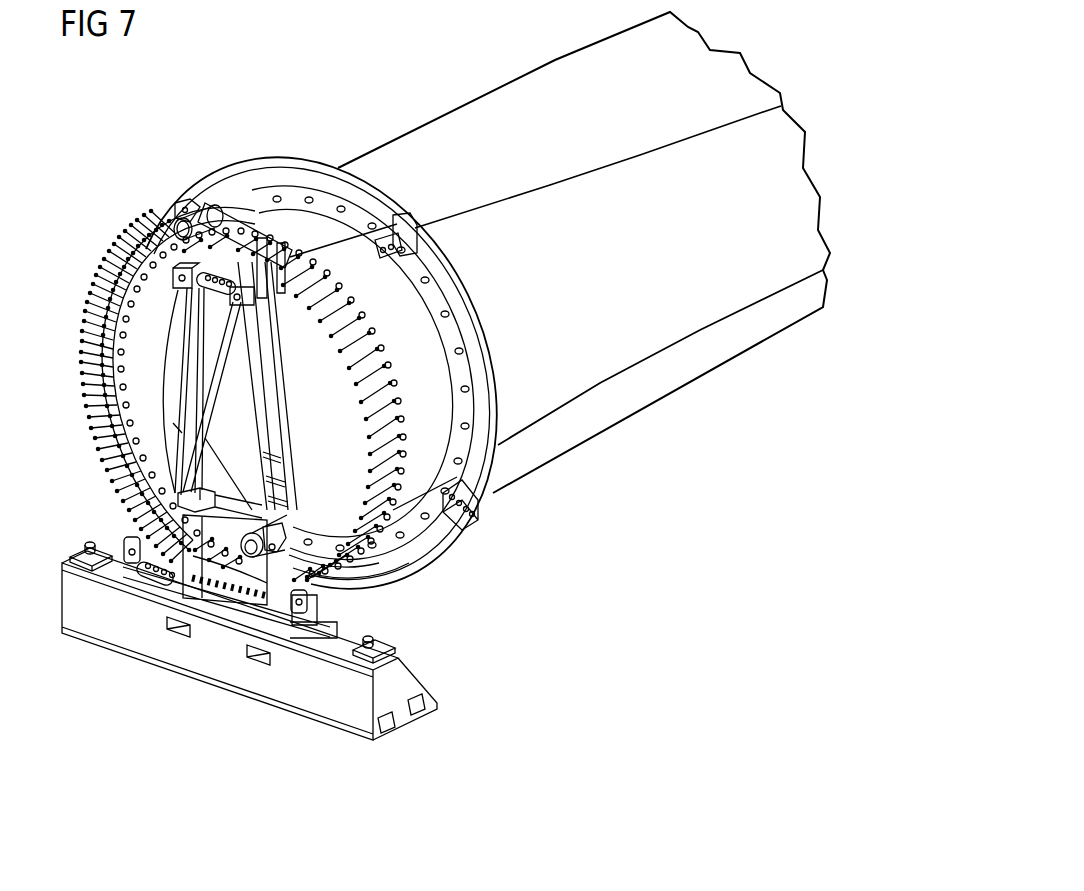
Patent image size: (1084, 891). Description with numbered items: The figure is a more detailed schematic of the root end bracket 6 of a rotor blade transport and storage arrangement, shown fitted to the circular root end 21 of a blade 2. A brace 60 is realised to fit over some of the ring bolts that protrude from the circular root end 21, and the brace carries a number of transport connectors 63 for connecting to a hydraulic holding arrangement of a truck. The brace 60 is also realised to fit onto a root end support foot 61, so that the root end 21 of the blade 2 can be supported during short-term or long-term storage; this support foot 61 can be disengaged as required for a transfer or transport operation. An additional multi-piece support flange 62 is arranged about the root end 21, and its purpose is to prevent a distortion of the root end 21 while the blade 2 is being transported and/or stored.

The blade 2 is at (620, 406).
The root end bracket 6 is at (234, 427).
The root end 21 is at (395, 537).
The brace 60 is at (140, 518).
The root end support foot 61 is at (113, 640).
The multi-piece support flange 62 is at (446, 536).
The transport connectors 63 is at (250, 547).